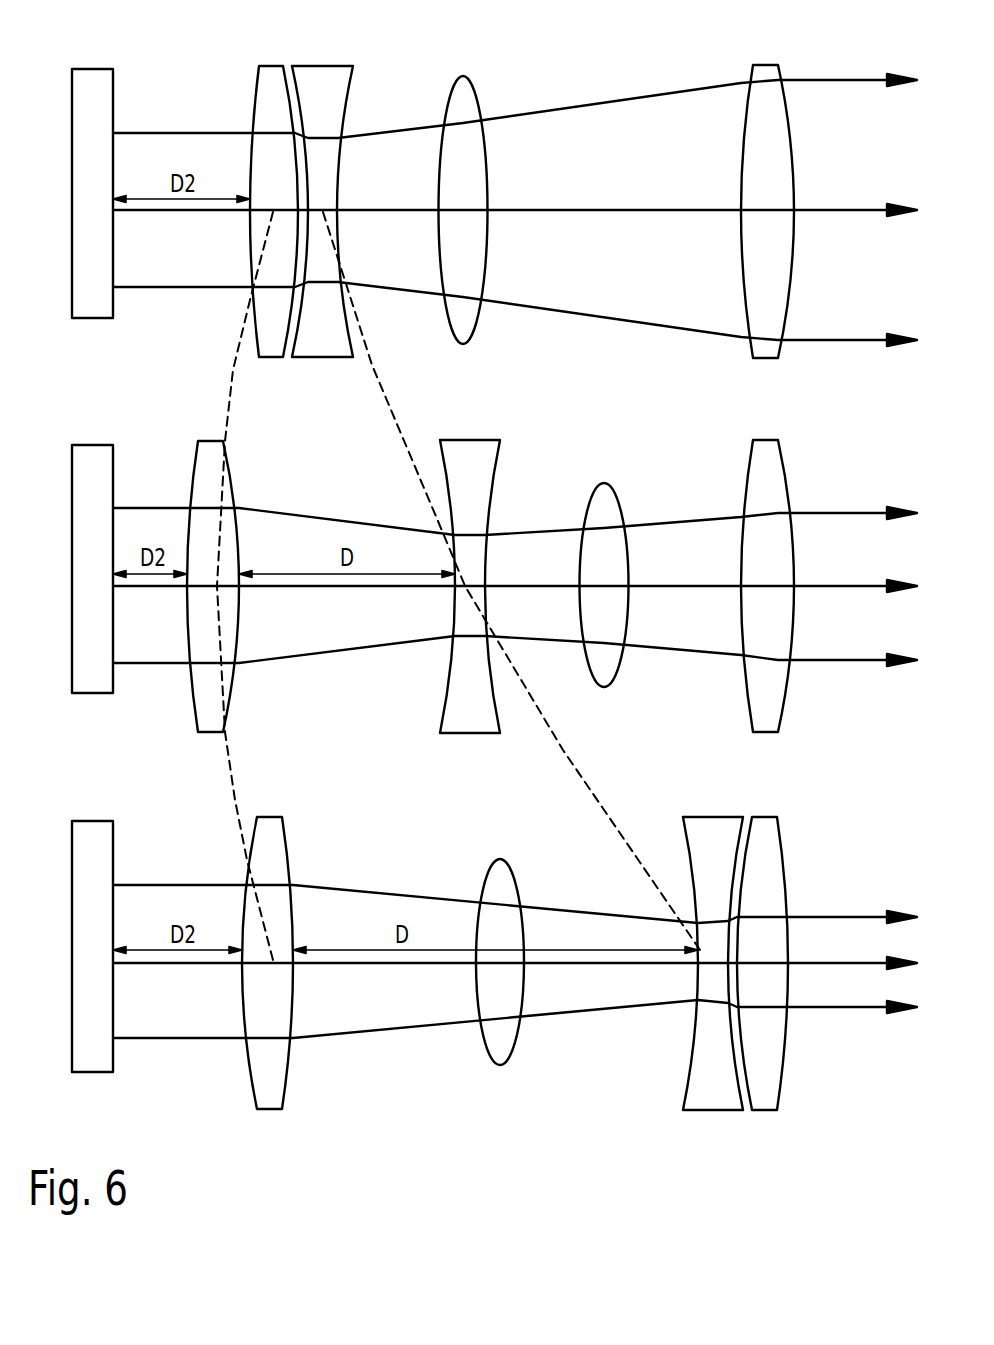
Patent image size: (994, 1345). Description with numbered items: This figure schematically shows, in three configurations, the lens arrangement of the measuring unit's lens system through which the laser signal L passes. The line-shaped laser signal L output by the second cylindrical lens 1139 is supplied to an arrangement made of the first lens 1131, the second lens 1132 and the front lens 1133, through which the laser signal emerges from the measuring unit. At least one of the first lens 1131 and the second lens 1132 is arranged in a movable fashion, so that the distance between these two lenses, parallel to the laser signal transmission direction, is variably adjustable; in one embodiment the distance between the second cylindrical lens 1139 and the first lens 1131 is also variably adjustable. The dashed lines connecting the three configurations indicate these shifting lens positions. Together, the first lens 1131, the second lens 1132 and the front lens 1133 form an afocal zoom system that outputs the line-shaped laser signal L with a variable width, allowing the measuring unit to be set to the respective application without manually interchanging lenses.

The second cylindrical lens 1139 is at (91, 68).
The first lens 1131 is at (270, 66).
The second lens 1132 is at (335, 66).
The front lens 1133 is at (763, 65).
The laser signal L is at (463, 76).